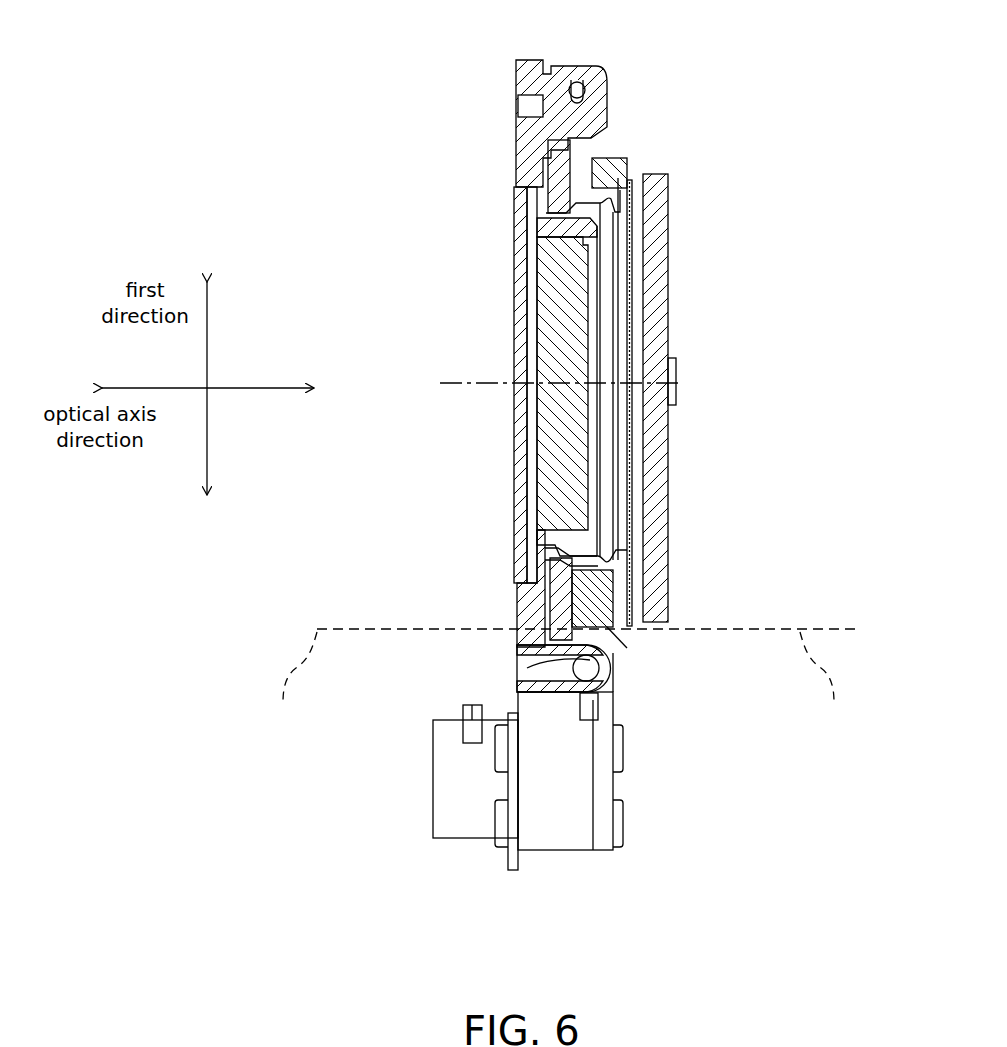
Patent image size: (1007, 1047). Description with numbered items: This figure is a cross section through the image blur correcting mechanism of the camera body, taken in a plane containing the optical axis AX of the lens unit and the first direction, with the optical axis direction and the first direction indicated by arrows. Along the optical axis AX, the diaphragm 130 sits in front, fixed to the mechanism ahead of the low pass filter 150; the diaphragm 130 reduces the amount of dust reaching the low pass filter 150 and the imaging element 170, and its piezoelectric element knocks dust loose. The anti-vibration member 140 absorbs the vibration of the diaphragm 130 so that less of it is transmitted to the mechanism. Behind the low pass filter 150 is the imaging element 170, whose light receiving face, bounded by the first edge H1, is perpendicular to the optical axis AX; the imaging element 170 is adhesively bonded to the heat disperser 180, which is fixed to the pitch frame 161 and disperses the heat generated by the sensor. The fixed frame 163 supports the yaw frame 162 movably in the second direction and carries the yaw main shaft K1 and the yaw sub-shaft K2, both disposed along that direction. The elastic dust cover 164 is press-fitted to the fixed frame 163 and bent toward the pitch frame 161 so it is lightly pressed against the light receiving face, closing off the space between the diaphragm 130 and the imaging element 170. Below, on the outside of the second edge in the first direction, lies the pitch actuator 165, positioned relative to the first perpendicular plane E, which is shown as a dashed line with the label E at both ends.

The diaphragm 130 is at (520, 495).
The anti-vibration member 140 is at (540, 550).
The low pass filter 150 is at (540, 442).
The pitch frame 161 is at (608, 158).
The yaw frame 162 is at (600, 578).
The fixed frame 163 is at (517, 148).
The dust cover 164 is at (625, 555).
The pitch actuator 165 is at (455, 803).
The imaging element 170 is at (632, 228).
The heat disperser 180 is at (658, 275).
The yaw main shaft K1 is at (580, 668).
The yaw sub-shaft K2 is at (577, 82).
The optical axis AX is at (462, 383).
The first edge H1 is at (629, 640).
The first perpendicular plane E is at (562, 685).